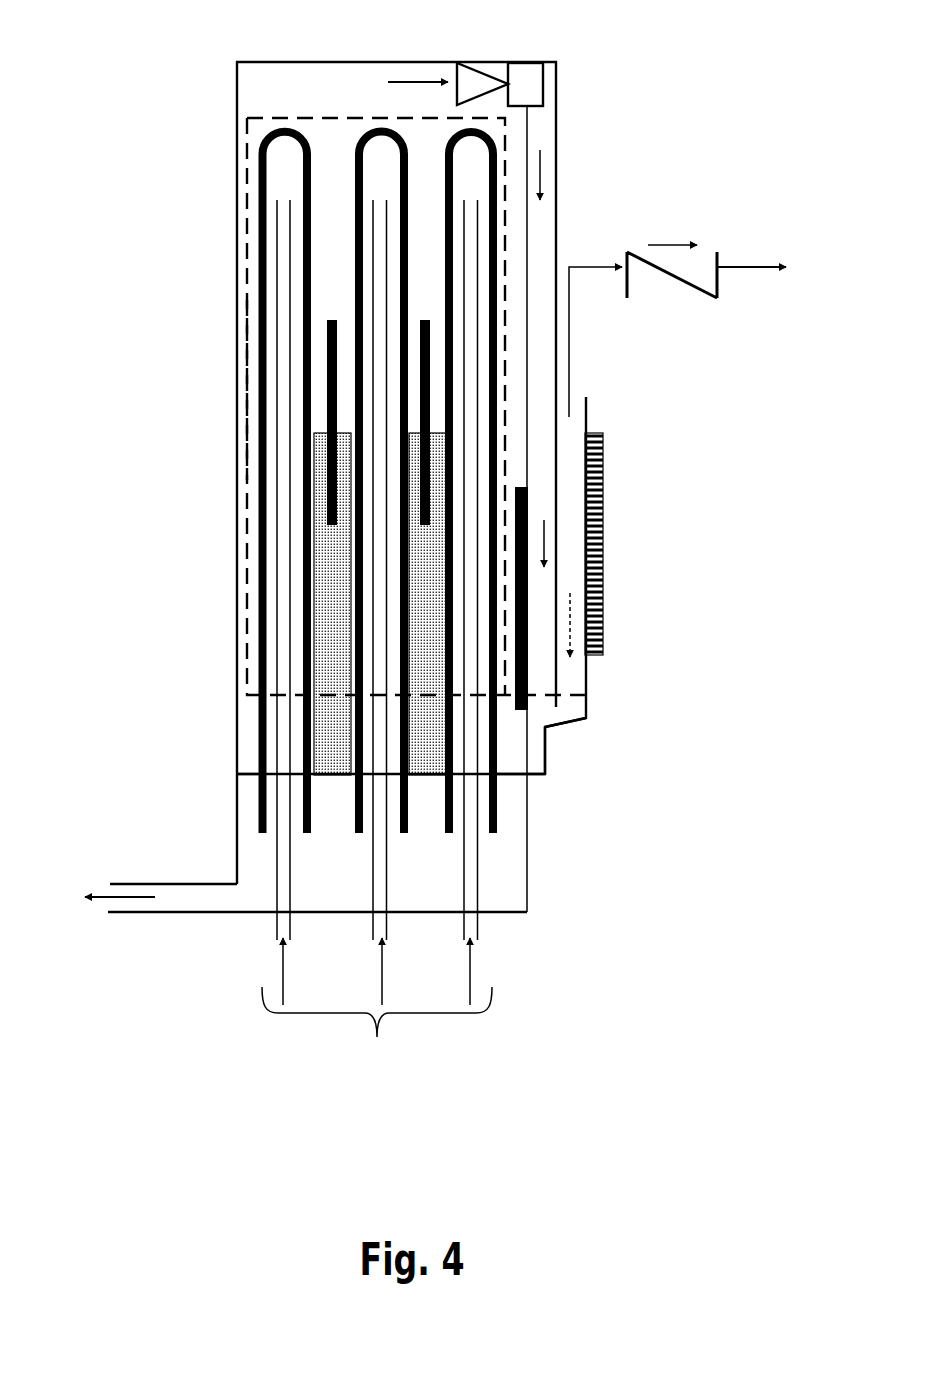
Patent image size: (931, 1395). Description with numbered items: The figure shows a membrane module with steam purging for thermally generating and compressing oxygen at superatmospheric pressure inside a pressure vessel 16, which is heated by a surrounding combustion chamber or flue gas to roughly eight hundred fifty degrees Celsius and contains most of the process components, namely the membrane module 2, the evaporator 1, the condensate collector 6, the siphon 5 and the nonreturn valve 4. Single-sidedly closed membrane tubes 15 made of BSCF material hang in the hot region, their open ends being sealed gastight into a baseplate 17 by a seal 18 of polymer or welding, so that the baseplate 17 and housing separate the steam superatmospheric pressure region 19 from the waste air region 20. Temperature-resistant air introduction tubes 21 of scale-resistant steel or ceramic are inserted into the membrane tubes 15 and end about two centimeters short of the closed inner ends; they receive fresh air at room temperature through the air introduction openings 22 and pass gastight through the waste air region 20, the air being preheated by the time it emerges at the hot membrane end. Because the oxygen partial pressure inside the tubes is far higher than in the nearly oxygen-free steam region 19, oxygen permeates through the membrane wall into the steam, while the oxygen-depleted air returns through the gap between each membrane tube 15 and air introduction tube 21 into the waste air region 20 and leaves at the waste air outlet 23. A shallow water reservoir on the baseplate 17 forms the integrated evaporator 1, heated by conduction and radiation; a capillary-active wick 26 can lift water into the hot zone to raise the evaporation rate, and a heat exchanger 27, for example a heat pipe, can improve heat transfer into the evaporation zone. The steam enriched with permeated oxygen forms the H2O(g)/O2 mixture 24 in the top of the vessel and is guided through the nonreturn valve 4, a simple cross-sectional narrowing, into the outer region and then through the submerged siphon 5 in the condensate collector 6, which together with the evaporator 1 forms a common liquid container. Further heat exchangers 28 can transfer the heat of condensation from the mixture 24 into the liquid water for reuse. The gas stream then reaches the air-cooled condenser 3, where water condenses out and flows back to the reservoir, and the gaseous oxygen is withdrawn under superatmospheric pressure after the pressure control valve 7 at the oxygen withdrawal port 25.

The evaporator 1 is at (245, 750).
The membrane module 2 is at (245, 380).
The condenser 3 is at (605, 548).
The nonreturn valve 4 is at (545, 85).
The siphon 5 is at (558, 715).
The condensate collector 6 is at (533, 748).
The pressure control valve 7 is at (662, 243).
The membrane tubes 15 is at (260, 193).
The pressure vessel 16 is at (245, 477).
The baseplate 17 is at (237, 775).
The seal 18 is at (520, 778).
The steam superatmospheric pressure region 19 is at (267, 87).
The waste air region 20 is at (502, 875).
The air introduction tubes 21 is at (280, 362).
The air introduction openings 22 is at (377, 1008).
The waste air outlet 23 is at (148, 902).
The H2O(g)/O2 mixture 24 is at (402, 82).
The oxygen withdrawal port 25 is at (745, 267).
The capillary-active wick 26 is at (317, 605).
The heat exchanger 27 is at (325, 330).
The further heat exchangers 28 is at (532, 667).